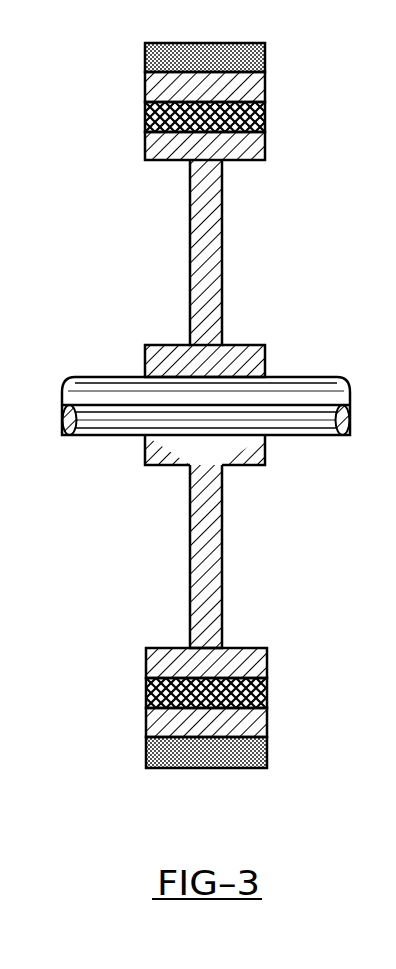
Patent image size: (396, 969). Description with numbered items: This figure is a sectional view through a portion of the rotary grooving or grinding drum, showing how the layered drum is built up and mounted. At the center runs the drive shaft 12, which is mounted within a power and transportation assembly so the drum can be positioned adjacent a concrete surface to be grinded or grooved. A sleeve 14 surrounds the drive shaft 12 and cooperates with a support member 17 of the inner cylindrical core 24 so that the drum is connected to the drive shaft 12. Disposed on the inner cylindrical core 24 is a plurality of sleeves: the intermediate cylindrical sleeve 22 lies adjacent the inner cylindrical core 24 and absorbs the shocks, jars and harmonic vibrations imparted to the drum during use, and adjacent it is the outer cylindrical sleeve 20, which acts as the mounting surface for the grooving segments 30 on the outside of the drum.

The drive shaft 12 is at (105, 407).
The sleeve 14 is at (157, 360).
The support member 17 is at (215, 245).
The outer cylindrical sleeve 20 is at (145, 90).
The intermediate cylindrical sleeve 22 is at (265, 118).
The inner cylindrical core 24 is at (147, 155).
The grooving segments 30 is at (147, 53).